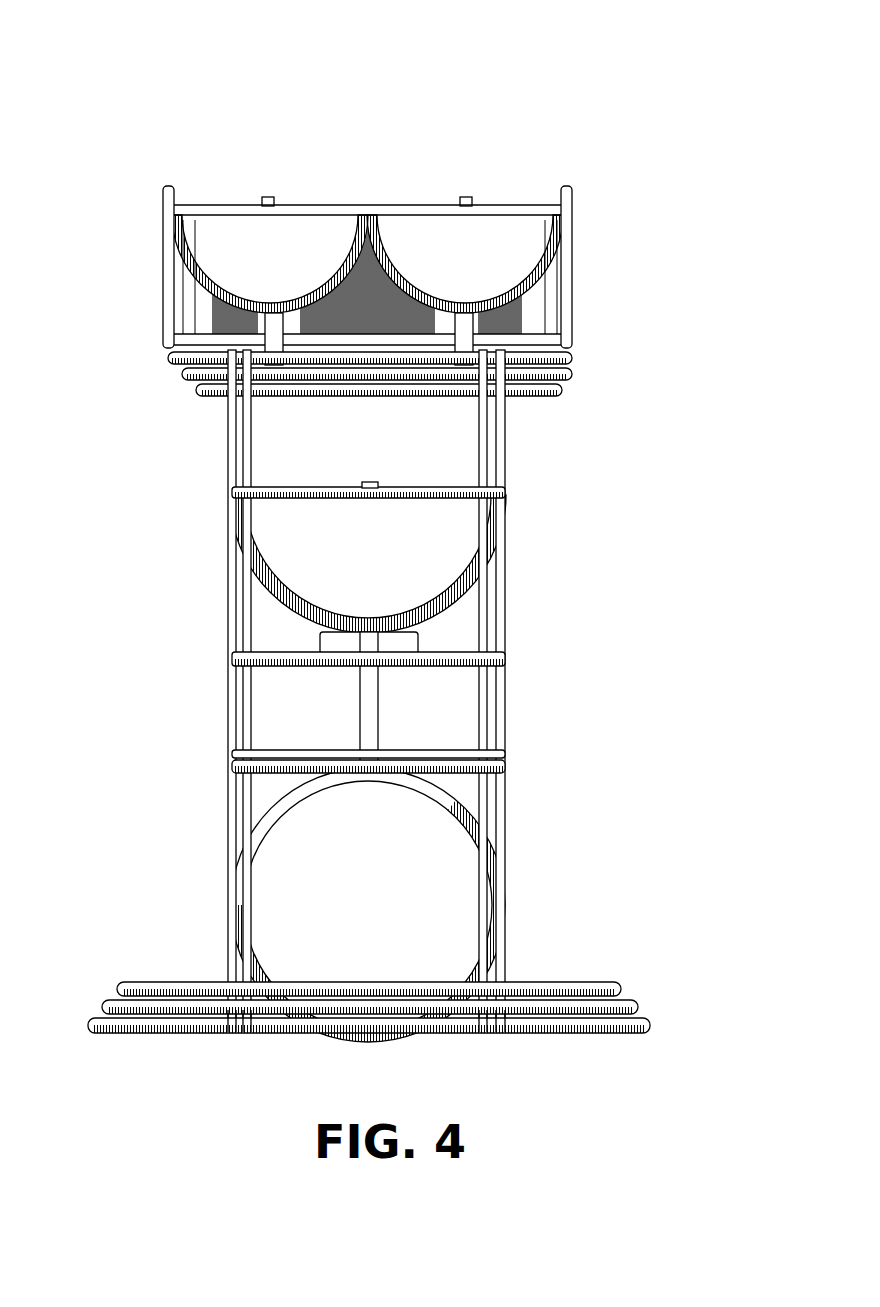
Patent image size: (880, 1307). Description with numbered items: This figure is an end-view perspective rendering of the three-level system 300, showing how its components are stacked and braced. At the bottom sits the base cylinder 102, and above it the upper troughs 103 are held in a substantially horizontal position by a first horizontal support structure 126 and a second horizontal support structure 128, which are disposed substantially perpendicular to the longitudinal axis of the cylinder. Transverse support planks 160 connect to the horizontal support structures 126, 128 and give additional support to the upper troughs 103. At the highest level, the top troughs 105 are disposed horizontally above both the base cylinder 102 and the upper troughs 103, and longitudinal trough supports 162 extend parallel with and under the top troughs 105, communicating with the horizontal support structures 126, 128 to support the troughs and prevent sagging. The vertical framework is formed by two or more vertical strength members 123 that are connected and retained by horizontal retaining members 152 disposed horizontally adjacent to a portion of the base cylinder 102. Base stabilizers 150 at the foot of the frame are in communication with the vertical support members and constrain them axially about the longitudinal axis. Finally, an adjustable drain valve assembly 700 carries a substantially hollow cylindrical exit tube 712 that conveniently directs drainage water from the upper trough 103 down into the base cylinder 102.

The 3-level system 300 is at (409, 526).
The top troughs 105 is at (485, 264).
The upper troughs 103 is at (390, 562).
The base cylinder 102 is at (390, 909).
The transverse support planks 160 is at (310, 338).
The longitudinal trough supports 162 is at (250, 327).
The first horizontal support structure 126 is at (562, 347).
The second horizontal support structure 128 is at (538, 392).
The adjustable drain valve assembly 700 is at (462, 392).
The exit tube 712 is at (362, 717).
The vertical strength members 123 is at (235, 820).
The horizontal retaining members 152 is at (487, 772).
The base stabilizers 150 is at (612, 1002).